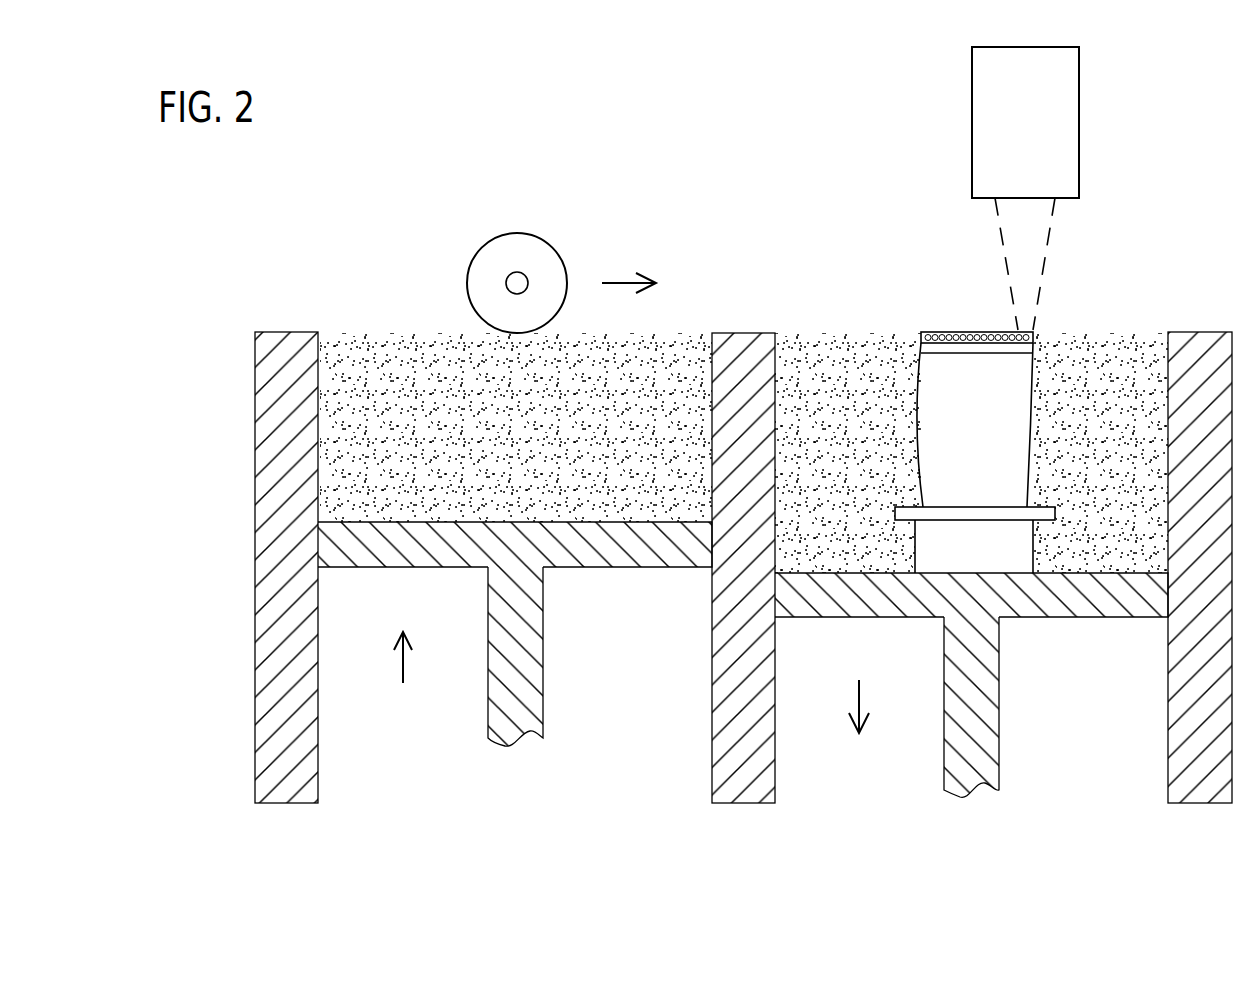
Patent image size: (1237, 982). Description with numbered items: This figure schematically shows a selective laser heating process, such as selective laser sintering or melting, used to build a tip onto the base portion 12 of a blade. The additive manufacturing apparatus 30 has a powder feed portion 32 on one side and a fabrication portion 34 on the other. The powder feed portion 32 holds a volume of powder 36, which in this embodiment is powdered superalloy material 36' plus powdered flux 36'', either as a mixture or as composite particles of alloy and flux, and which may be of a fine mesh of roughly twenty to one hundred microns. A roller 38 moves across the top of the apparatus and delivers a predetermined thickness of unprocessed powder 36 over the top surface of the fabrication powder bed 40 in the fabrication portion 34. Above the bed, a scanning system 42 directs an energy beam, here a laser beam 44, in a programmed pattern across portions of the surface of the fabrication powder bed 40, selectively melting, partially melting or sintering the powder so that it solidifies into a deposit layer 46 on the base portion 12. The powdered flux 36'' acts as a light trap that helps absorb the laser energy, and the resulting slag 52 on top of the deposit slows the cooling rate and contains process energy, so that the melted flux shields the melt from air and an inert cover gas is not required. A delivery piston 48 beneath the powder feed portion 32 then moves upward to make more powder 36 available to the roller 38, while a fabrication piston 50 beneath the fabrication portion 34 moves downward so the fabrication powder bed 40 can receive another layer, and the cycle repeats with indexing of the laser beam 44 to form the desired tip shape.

The base portion 12 is at (988, 458).
The additive manufacturing apparatus 30 is at (483, 120).
The powder feed portion 32 is at (349, 276).
The fabrication portion 34 is at (1151, 308).
The powder 36 is at (516, 392).
The powdered superalloy material 36' is at (263, 377).
The powdered flux 36'' is at (263, 425).
The roller 38 is at (485, 250).
The fabrication powder bed 40 is at (1072, 350).
The scanning system 42 is at (1040, 140).
The laser beam 44 is at (1047, 243).
The deposit layer 46 is at (978, 350).
The delivery piston 48 is at (543, 655).
The fabrication piston 50 is at (999, 693).
The slag 52 is at (955, 332).